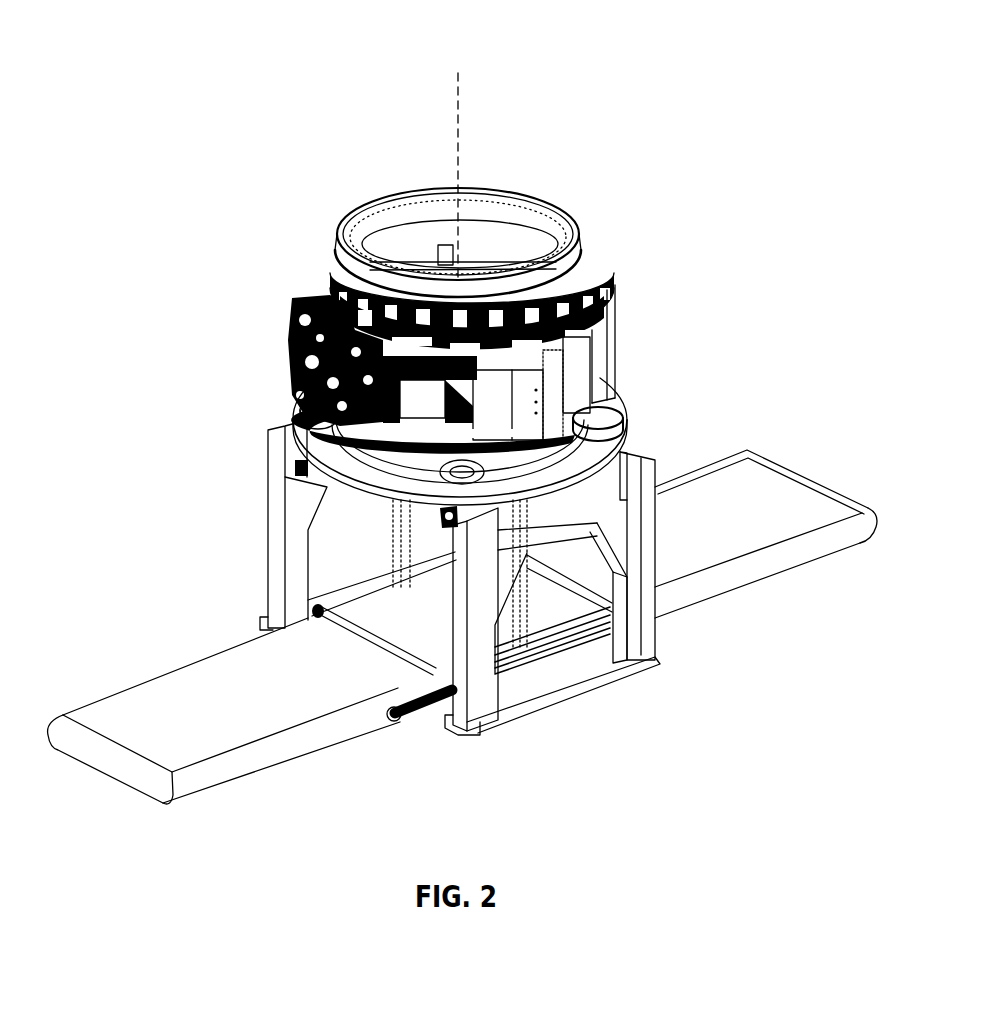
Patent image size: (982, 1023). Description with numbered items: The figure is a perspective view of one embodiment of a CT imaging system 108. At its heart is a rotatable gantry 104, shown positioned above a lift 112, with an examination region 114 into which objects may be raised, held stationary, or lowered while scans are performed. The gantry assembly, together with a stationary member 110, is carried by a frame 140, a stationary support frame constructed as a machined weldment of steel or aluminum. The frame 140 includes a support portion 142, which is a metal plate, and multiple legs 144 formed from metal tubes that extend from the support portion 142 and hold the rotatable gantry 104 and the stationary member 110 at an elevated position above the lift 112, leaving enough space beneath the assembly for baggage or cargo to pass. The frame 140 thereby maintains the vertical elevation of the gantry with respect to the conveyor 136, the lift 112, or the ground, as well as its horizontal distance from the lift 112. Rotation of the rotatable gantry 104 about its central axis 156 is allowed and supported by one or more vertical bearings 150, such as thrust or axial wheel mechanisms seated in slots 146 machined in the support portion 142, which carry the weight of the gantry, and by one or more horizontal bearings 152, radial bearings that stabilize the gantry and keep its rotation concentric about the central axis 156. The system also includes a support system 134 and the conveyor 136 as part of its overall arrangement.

The rotatable gantry 104 is at (466, 305).
The CT imaging system 108 is at (462, 441).
The stationary member 110 is at (289, 352).
The lift 112 is at (461, 696).
The examination region 114 is at (444, 219).
The support system 134 is at (444, 552).
The conveyor 136 is at (462, 666).
The frame 140 is at (595, 699).
The support portion 142 is at (512, 441).
The legs 144 is at (683, 562).
The slots 146 is at (245, 471).
The vertical bearings 150 is at (395, 526).
The horizontal bearings 152 is at (643, 402).
The central axis 156 is at (509, 174).